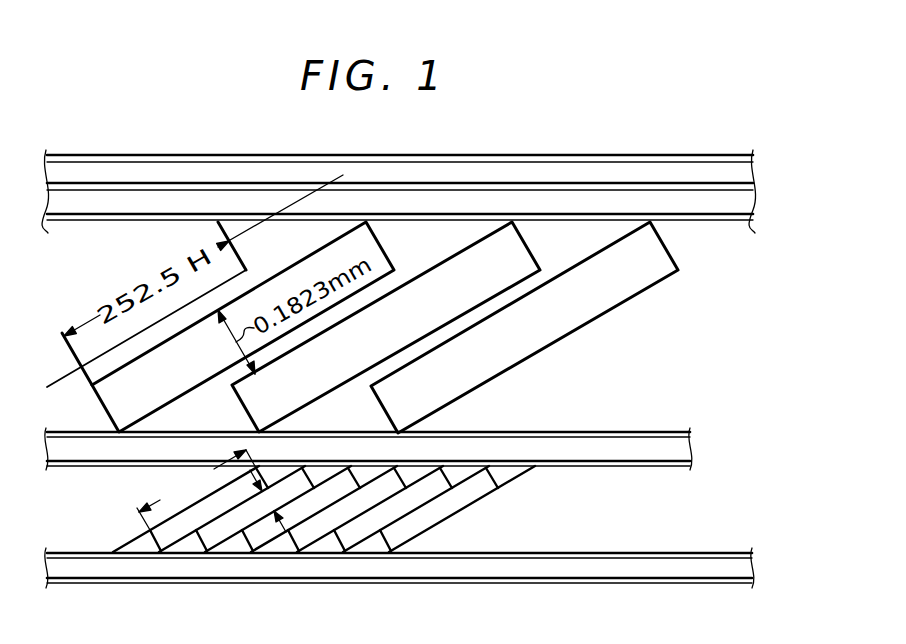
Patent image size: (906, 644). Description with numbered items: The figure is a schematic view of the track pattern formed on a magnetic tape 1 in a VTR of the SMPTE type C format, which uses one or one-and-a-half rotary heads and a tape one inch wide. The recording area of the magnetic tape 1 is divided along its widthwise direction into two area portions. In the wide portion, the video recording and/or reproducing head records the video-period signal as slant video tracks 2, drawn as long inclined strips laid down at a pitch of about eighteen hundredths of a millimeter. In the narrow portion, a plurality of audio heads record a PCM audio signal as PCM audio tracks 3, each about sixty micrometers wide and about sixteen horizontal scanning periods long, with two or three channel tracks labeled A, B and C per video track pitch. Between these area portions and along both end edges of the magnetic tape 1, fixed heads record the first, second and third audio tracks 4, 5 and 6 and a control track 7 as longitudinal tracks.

The magnetic tape 1 is at (548, 158).
The slant video track 2 is at (602, 315).
The PCM audio track 3 is at (470, 498).
The first audio track 4 is at (742, 173).
The second audio track 5 is at (737, 203).
The third audio track 6 is at (722, 553).
The control track 7 is at (683, 450).